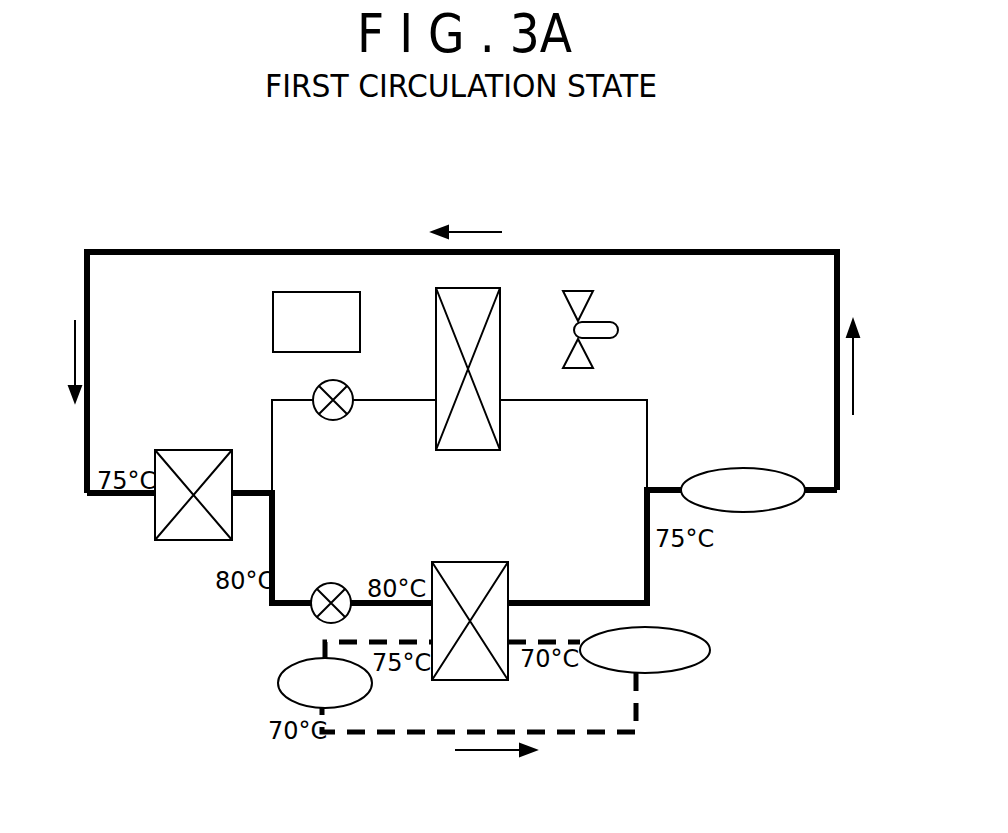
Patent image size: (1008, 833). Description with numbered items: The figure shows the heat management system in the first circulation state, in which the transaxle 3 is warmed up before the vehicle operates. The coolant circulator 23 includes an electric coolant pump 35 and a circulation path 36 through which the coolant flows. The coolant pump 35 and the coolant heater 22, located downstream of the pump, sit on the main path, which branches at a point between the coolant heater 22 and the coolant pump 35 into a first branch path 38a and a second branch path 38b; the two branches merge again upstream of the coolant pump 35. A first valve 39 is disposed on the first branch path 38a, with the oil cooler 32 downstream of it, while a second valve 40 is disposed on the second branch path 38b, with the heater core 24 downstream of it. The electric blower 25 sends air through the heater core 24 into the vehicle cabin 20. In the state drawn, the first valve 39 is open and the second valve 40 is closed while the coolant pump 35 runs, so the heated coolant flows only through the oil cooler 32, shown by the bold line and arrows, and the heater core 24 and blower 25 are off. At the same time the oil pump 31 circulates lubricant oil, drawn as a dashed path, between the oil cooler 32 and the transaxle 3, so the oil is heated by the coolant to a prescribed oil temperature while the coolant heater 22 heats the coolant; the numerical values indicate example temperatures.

The circulation path 36 is at (752, 246).
The coolant circulator 23 is at (680, 392).
The second branch path 38b is at (647, 430).
The first branch path 38a is at (647, 578).
The vehicle cabin 20 is at (273, 320).
The second valve 40 is at (316, 388).
The first valve 39 is at (318, 613).
The coolant heater 22 is at (180, 540).
The heater core 24 is at (436, 350).
The electric blower 25 is at (600, 324).
The oil cooler 32 is at (466, 562).
The coolant pump 35 is at (783, 512).
The transaxle 3 is at (278, 684).
The oil pump 31 is at (668, 673).